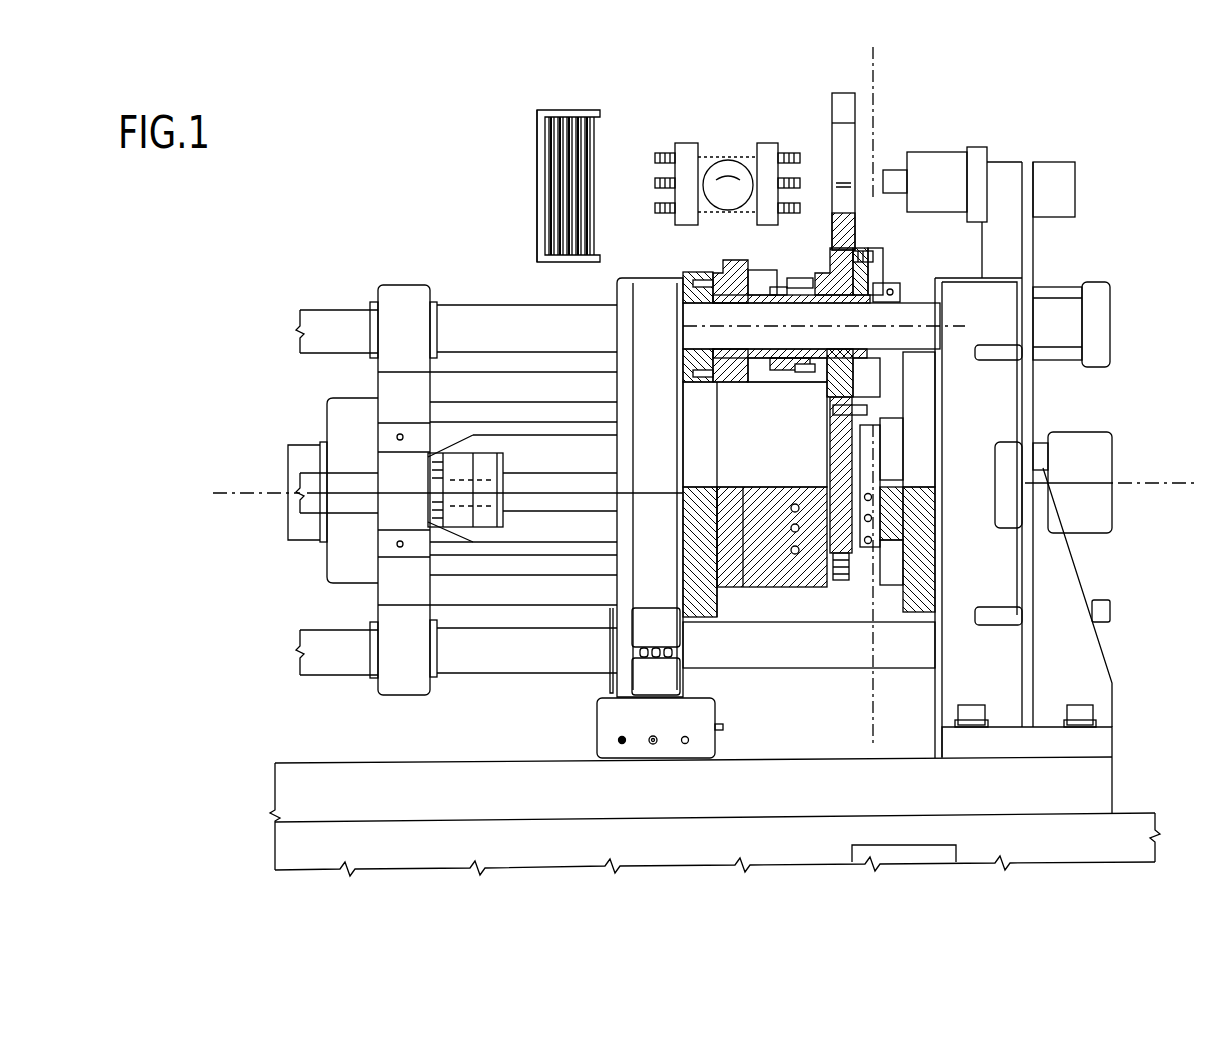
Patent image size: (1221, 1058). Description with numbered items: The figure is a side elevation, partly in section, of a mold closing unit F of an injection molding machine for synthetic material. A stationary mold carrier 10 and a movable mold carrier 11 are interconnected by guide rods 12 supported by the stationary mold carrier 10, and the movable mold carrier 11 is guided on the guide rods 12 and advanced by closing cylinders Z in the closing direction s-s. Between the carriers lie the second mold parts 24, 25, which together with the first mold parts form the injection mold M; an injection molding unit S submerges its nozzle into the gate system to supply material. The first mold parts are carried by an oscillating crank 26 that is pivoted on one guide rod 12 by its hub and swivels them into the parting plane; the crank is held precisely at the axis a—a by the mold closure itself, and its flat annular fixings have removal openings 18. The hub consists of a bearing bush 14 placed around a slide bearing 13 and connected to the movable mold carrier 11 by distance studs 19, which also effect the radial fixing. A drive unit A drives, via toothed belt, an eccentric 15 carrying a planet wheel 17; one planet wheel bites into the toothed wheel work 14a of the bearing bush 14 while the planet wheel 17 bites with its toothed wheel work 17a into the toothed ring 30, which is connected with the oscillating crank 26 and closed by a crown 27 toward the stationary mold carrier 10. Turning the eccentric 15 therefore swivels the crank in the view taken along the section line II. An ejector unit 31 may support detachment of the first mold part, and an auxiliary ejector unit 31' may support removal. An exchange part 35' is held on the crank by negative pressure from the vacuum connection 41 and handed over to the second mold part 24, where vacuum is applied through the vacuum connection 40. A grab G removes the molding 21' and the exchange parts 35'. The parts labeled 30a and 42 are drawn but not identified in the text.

The stationary mold carrier 10 is at (1120, 705).
The movable mold carrier 11 is at (610, 370).
The guide rods 12 is at (478, 332).
The slide bearing 13 is at (778, 370).
The bearing bush 14 is at (745, 252).
The toothed wheel work of the bearing bush 14a is at (943, 287).
The eccentric 15 is at (813, 282).
The planet wheel 17 is at (876, 378).
The toothed wheel work of the planet wheel 17a is at (902, 390).
The removal openings 18 is at (867, 545).
The distance studs 19 is at (730, 282).
The molding 21' is at (820, 139).
The second mold part 24 is at (743, 588).
The second mold part 25 is at (872, 625).
The oscillating crank 26 is at (862, 137).
The crown 27 is at (880, 273).
The toothed ring 30 is at (853, 257).
The clamping screw 30a is at (877, 262).
The ejector unit 31 is at (499, 490).
The auxiliary ejector unit 31' is at (936, 178).
The exchange part 35' is at (585, 160).
The vacuum connection 40 is at (812, 497).
The vacuum connection 41 is at (836, 580).
The holder 42 is at (541, 191).
The drive unit A is at (686, 270).
The mold closing unit F is at (631, 270).
The grab G is at (765, 137).
The injection mold M is at (786, 598).
The injection molding unit S is at (1083, 429).
The closing cylinders Z is at (340, 432).
The axis a— a is at (669, 327).
The closing direction s- s is at (701, 492).
The section line II- II is at (873, 47).